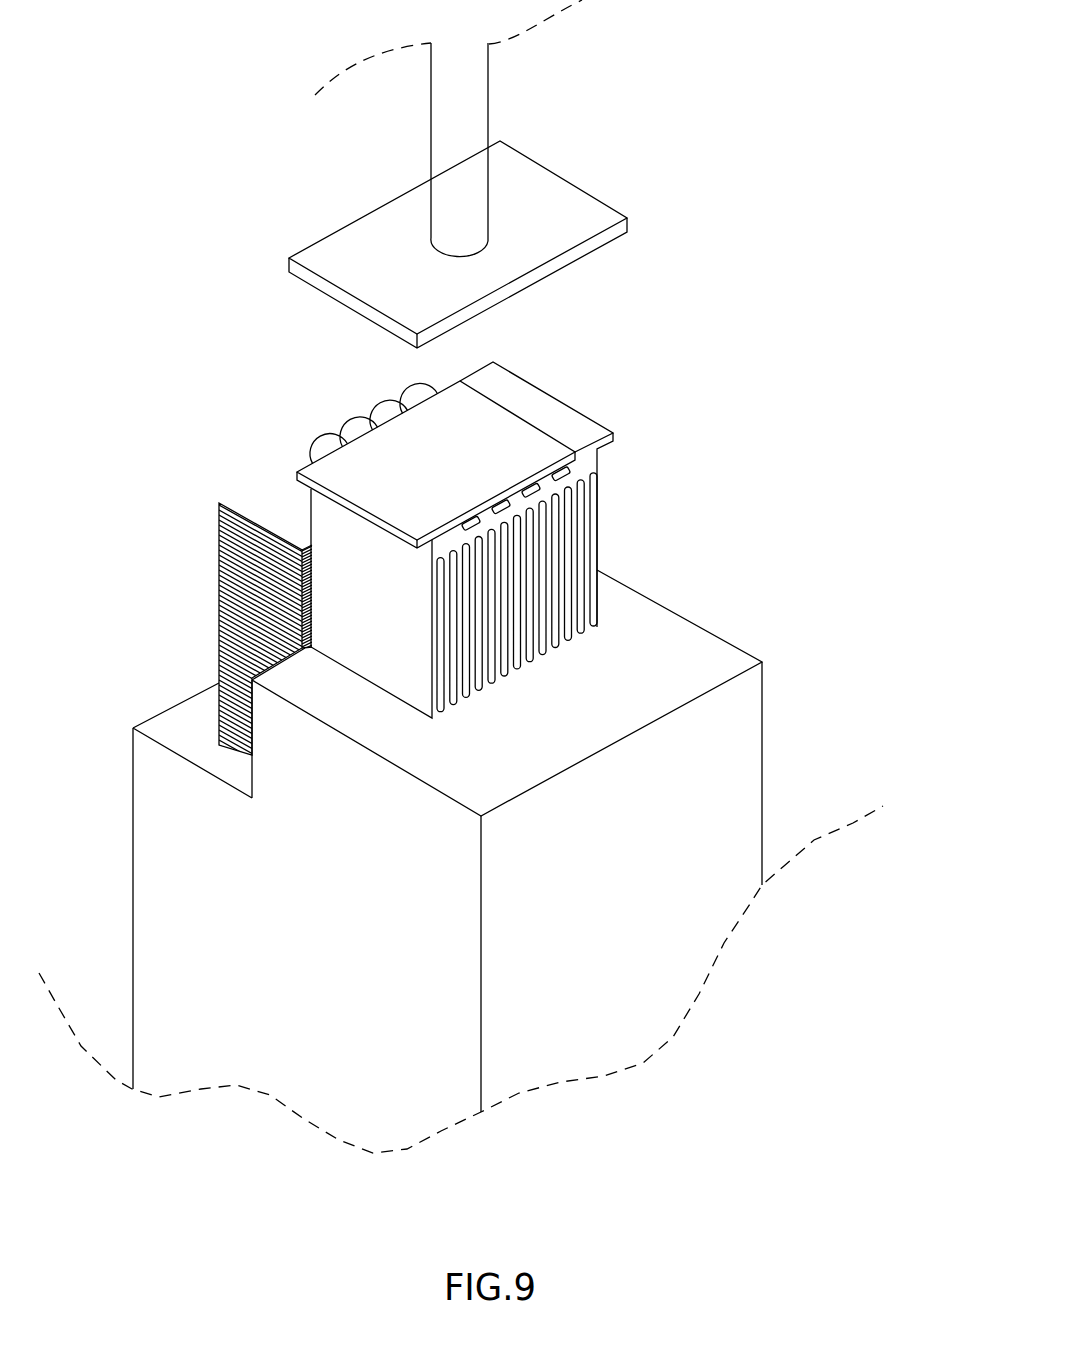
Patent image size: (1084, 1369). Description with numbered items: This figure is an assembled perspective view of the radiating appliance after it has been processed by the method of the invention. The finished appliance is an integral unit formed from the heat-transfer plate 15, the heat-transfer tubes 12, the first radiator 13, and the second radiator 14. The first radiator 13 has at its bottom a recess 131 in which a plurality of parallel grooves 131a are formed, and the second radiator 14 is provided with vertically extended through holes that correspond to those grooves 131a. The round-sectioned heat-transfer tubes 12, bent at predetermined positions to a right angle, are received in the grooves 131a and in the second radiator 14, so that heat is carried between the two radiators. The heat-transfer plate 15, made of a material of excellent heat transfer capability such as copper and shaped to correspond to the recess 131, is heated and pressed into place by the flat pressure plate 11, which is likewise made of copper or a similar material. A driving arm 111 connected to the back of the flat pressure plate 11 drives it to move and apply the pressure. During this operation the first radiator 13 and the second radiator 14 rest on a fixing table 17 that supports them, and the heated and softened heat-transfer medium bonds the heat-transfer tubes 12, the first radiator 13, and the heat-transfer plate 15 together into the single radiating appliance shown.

The flat pressure plate 11 is at (557, 201).
The driving arm 111 is at (455, 143).
The heat-transfer tubes 12 is at (323, 447).
The first radiator 13 is at (505, 380).
The recess 131 is at (443, 532).
The grooves 131a is at (580, 475).
The second radiator 14 is at (260, 502).
The heat-transfer plate 15 is at (418, 428).
The fixing table 17 is at (752, 745).